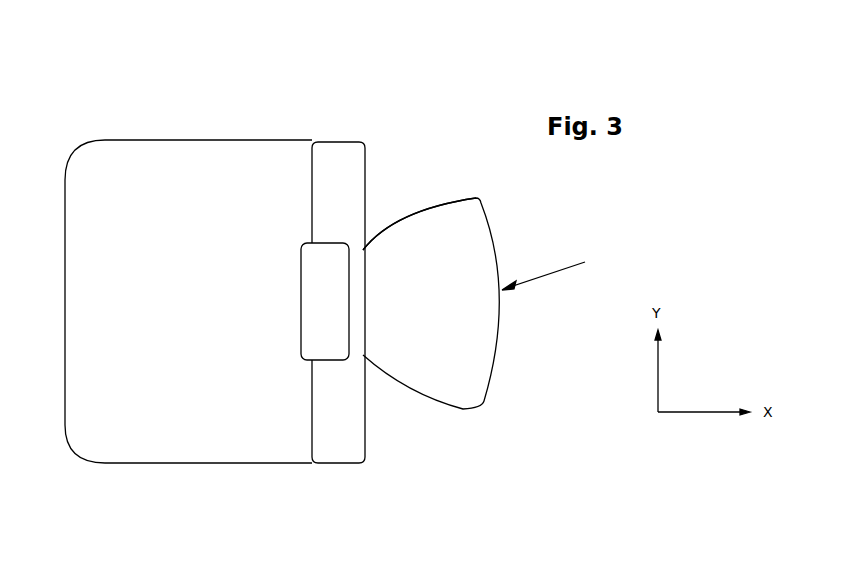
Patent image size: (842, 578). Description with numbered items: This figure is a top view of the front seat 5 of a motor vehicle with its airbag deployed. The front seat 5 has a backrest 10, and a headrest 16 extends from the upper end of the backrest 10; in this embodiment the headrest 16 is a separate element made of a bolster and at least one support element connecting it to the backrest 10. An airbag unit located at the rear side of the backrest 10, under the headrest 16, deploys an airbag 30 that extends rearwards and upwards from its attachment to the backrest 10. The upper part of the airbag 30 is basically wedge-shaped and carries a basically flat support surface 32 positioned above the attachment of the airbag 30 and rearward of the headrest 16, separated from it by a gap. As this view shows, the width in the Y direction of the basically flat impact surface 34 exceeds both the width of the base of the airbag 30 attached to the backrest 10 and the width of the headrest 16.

The front seat 5 is at (143, 425).
The backrest 10 is at (340, 140).
The headrest 16 is at (327, 333).
The airbag 30 is at (435, 347).
The support surface 32 is at (443, 250).
The impact surface 34 is at (559, 269).